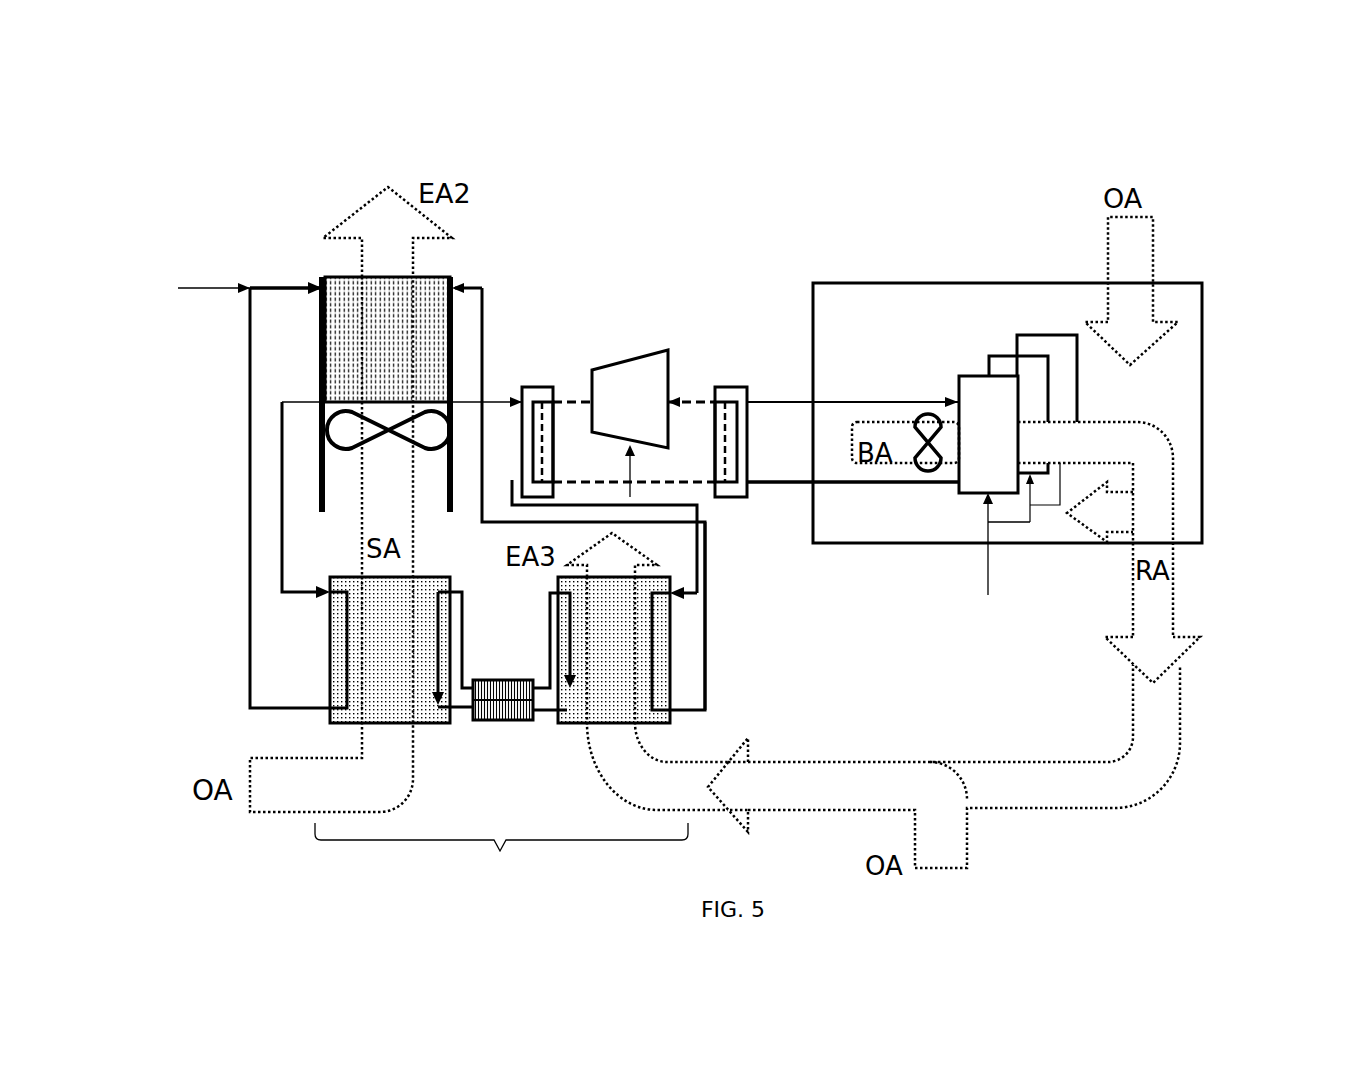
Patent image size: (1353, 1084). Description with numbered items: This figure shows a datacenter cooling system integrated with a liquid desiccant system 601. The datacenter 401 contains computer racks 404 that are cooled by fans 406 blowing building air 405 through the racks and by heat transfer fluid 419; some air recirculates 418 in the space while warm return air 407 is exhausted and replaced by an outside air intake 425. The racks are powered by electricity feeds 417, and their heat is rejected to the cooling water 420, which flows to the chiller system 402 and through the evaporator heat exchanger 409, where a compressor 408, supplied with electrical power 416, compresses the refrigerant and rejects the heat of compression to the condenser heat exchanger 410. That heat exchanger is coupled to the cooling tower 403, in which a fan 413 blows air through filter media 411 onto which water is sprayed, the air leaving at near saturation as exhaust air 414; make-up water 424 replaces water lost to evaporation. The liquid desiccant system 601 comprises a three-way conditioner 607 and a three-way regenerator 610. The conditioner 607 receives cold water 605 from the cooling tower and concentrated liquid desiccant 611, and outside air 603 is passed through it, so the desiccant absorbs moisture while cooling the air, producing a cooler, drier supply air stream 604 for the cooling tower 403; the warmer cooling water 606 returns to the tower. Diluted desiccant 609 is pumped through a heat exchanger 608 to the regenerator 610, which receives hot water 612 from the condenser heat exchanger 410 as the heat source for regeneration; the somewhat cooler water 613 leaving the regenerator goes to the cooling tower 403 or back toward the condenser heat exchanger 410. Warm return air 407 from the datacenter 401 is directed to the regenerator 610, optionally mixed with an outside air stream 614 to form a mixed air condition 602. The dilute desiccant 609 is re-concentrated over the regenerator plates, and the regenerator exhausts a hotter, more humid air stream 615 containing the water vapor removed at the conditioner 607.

The datacenter 401 is at (990, 190).
The chiller system 402 is at (652, 233).
The cooling tower 403 is at (491, 203).
The computer racks 404 is at (1047, 325).
The building air 405 is at (872, 427).
The fans 406 is at (928, 418).
The exhaust air 407 is at (1173, 580).
The compressor 408 is at (643, 375).
The evaporator heat exchanger 409 is at (730, 387).
The condenser heat exchanger 410 is at (537, 387).
The filter media 411 is at (352, 355).
The fan 413 is at (348, 430).
The exhaust air 414 is at (395, 232).
The electrical power 416 is at (633, 470).
The electricity feeds 417 is at (995, 555).
The recirculating air 418 is at (1097, 513).
The heat transfer fluid 419 is at (782, 396).
The cooling water 420 is at (765, 488).
The make-up water 424 is at (218, 278).
The outside air intake 425 is at (1135, 227).
The liquid desiccant system 601 is at (501, 856).
The mixed air condition 602 is at (652, 777).
The outside air 603 is at (268, 793).
The supply air stream 604 is at (387, 512).
The cold water 605 is at (283, 588).
The warmer cooling water 606 is at (247, 685).
The 3-way conditioner 607 is at (330, 723).
The heat exchanger 608 is at (505, 730).
The diluted desiccant 609 is at (463, 727).
The 3-way regenerator 610 is at (570, 725).
The concentrated liquid desiccant 611 is at (470, 657).
The hot water 612 is at (698, 600).
The cooler water 613 is at (712, 583).
The outside air stream 614 is at (955, 827).
The exhaust air stream 615 is at (613, 552).